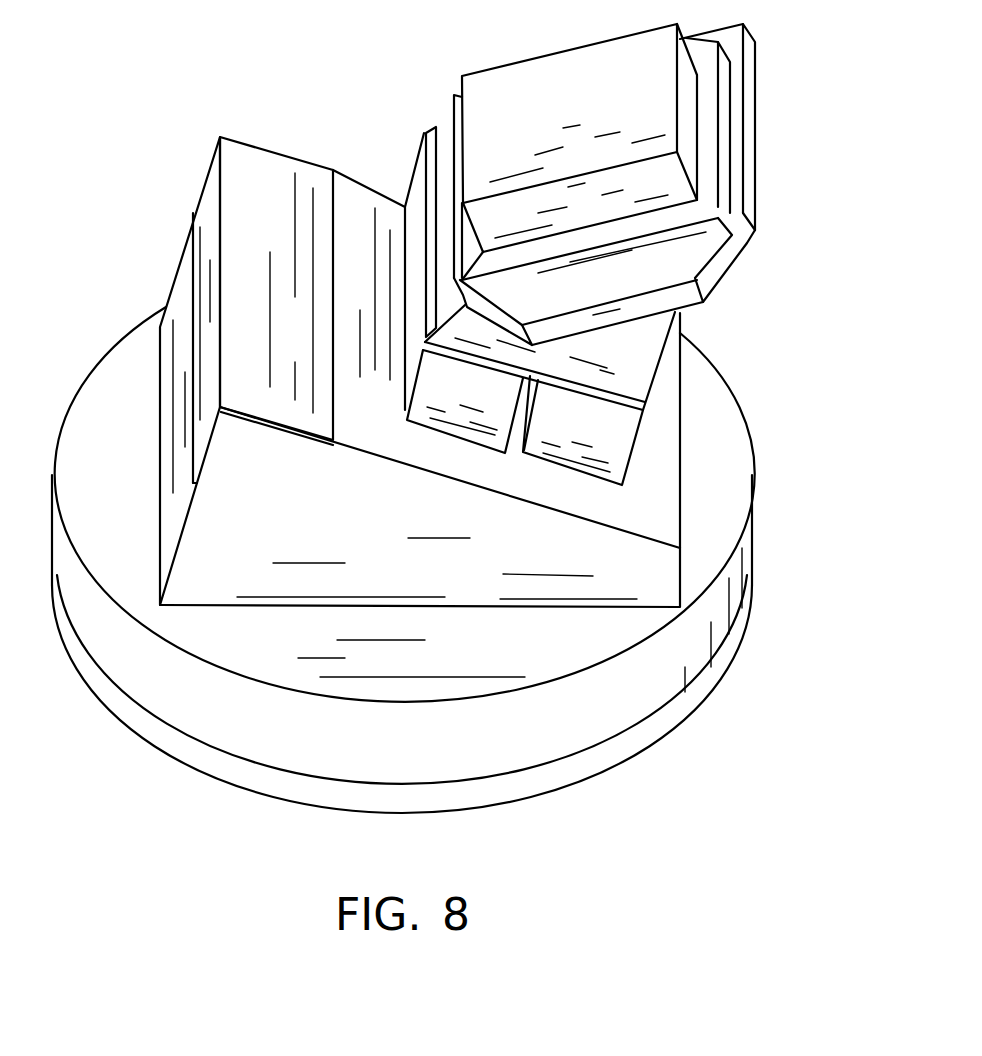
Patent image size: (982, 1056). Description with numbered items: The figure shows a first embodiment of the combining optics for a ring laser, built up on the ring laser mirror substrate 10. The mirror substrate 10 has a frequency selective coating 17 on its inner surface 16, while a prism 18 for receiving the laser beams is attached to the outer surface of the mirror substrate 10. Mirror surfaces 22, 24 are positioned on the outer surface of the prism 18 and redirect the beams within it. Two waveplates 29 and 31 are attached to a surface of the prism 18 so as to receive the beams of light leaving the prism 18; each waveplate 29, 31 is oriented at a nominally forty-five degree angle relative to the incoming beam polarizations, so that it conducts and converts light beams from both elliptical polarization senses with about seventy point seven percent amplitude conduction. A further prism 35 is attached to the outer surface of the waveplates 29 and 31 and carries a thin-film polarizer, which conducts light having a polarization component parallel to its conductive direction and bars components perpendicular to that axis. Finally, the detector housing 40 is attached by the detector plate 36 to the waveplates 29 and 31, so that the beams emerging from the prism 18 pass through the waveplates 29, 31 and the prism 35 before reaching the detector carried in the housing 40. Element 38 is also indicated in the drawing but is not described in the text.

The ring laser mirror substrate 10 is at (630, 724).
The inner surface 16 is at (462, 797).
The frequency selective coating 17 is at (545, 787).
The prism 18 is at (210, 570).
The mirror surface 22 is at (210, 183).
The mirror surface 24 is at (248, 157).
The waveplate 29 is at (425, 402).
The waveplate 31 is at (593, 458).
The prism 35 is at (638, 362).
The detector plate 36 is at (728, 257).
The bracket 38 is at (723, 207).
The detector housing 40 is at (585, 60).